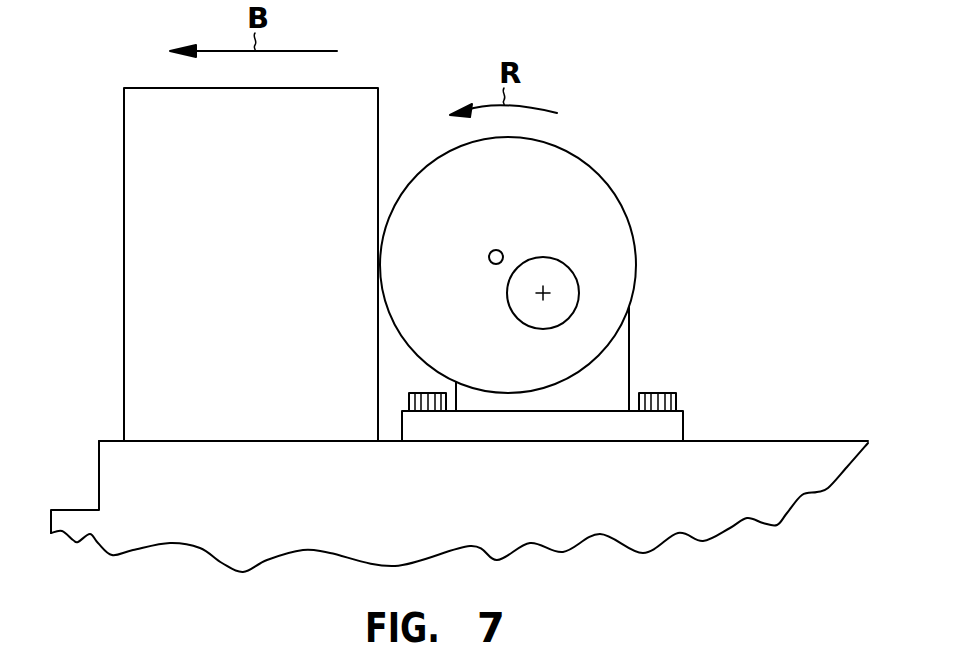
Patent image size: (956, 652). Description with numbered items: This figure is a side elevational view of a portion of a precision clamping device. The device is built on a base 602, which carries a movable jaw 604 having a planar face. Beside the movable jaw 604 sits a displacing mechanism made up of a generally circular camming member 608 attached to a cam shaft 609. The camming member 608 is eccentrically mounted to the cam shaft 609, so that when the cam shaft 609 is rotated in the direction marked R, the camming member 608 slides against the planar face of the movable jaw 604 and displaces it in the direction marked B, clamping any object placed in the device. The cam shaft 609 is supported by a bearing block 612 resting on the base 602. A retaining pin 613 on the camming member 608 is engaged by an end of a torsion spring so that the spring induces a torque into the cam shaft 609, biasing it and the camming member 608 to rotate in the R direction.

The base 602 is at (782, 452).
The movable jaw 604 is at (124, 244).
The camming member 608 is at (592, 166).
The cam shaft 609 is at (578, 281).
The bearing block 612 is at (610, 366).
The retaining pin 613 is at (491, 252).